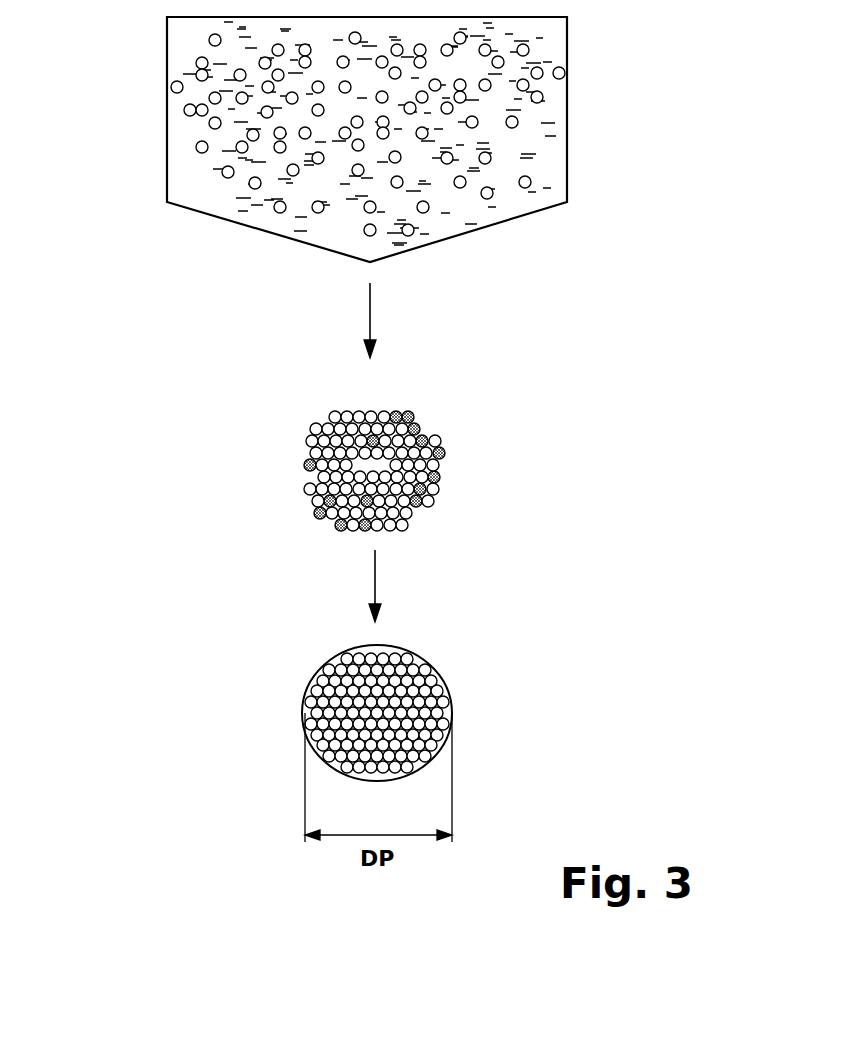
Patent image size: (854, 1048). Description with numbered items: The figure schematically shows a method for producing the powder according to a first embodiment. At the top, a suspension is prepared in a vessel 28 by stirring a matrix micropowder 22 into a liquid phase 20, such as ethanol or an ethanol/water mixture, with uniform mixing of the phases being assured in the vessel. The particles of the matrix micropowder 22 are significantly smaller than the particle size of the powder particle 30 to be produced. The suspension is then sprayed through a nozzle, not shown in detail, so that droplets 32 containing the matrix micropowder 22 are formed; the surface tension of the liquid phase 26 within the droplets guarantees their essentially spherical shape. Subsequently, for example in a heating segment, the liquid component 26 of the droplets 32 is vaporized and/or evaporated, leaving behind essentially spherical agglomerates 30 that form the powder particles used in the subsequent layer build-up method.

The liquid phase 20 is at (567, 130).
The matrix micropowder 22 is at (531, 182).
The liquid phase of the droplets 26 is at (445, 453).
The container 28 is at (167, 118).
The powder particle 30 is at (425, 695).
The droplets 32 is at (346, 471).